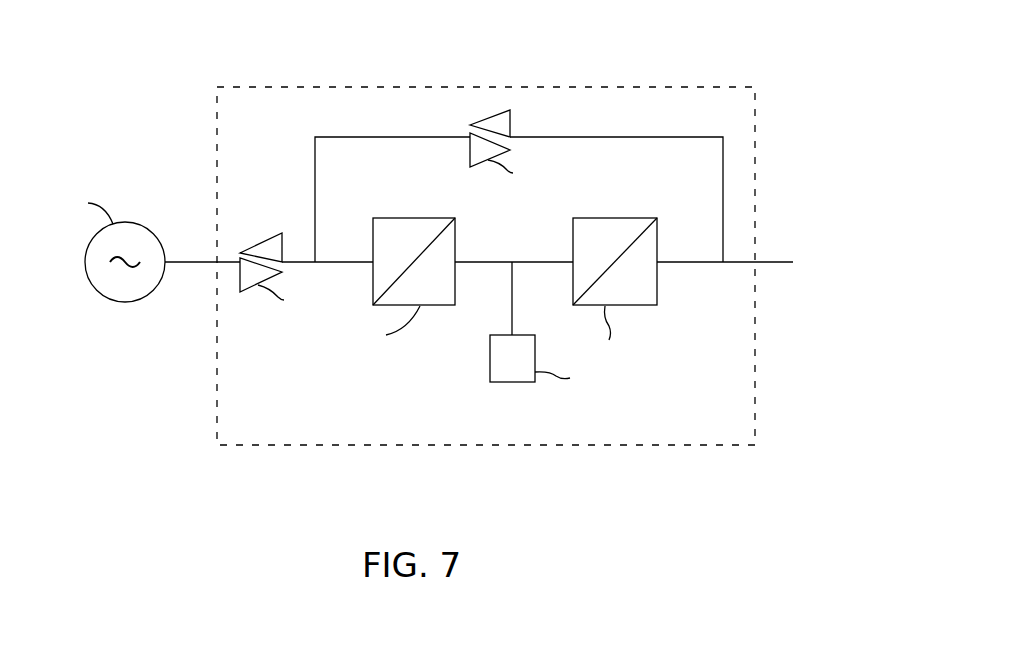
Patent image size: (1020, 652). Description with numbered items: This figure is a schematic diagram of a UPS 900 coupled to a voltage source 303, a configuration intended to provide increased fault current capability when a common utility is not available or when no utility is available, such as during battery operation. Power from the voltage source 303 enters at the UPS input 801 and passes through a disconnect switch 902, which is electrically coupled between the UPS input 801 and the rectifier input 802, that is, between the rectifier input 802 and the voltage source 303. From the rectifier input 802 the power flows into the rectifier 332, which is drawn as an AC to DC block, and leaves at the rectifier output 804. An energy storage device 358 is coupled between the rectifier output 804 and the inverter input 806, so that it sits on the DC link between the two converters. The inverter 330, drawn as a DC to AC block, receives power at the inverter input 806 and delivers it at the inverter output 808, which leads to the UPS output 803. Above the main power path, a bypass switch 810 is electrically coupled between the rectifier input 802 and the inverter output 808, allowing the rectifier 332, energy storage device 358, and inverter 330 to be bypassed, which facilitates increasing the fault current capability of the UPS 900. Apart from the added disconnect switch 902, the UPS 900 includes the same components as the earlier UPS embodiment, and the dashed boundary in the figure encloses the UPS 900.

The UPS 900 is at (640, 86).
The voltage source 303 is at (125, 302).
The input 801 is at (186, 259).
The disconnect switch 902 is at (270, 232).
The rectifier input 802 is at (349, 259).
The rectifier 332 is at (415, 218).
The rectifier output 804 is at (483, 266).
The inverter input 806 is at (535, 259).
The energy storage device 358 is at (490, 368).
The inverter 330 is at (650, 218).
The inverter output 808 is at (675, 266).
The output 803 is at (783, 266).
The bypass switch 810 is at (499, 108).